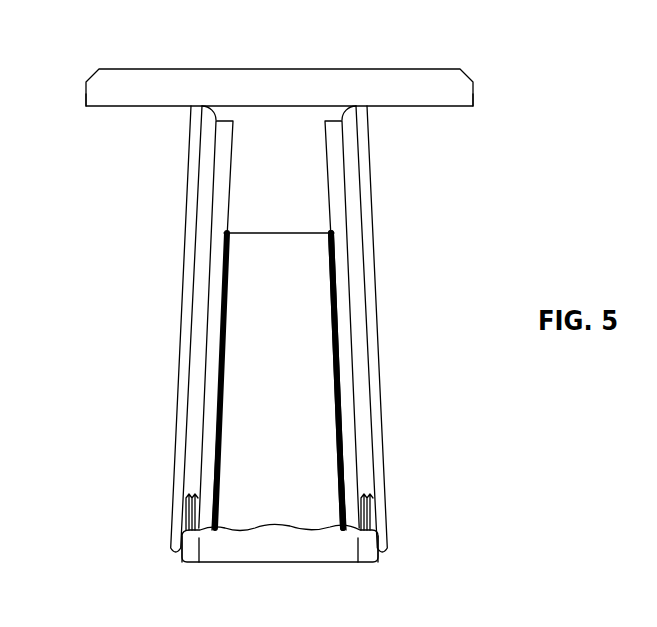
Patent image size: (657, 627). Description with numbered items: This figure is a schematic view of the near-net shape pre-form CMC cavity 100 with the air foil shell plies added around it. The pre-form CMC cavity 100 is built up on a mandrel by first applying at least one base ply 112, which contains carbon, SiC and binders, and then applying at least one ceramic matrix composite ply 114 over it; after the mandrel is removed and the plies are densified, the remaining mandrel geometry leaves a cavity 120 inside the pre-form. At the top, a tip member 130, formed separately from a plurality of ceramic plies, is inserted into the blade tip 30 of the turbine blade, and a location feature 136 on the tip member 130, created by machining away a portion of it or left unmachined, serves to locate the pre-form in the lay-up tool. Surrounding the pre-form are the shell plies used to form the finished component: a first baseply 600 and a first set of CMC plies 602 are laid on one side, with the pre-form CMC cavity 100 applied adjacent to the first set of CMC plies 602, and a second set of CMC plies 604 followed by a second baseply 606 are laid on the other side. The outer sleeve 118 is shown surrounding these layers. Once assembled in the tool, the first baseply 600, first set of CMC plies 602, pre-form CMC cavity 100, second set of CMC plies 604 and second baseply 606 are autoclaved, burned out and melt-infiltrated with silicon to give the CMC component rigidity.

The tip member 130 is at (422, 80).
The location feature 136 is at (100, 98).
The outer sleeve 118 is at (372, 395).
The ceramic matrix composite ply 114 is at (350, 317).
The base ply 112 is at (337, 272).
The cavity 120 is at (297, 376).
The second baseply 606 is at (173, 550).
The first baseply 600 is at (380, 548).
The pre-form CMC cavity 100 is at (280, 563).
The second set of CMC plies 604 is at (187, 563).
The first set of CMC plies 602 is at (368, 565).
The blade tip 30 is at (603, 626).